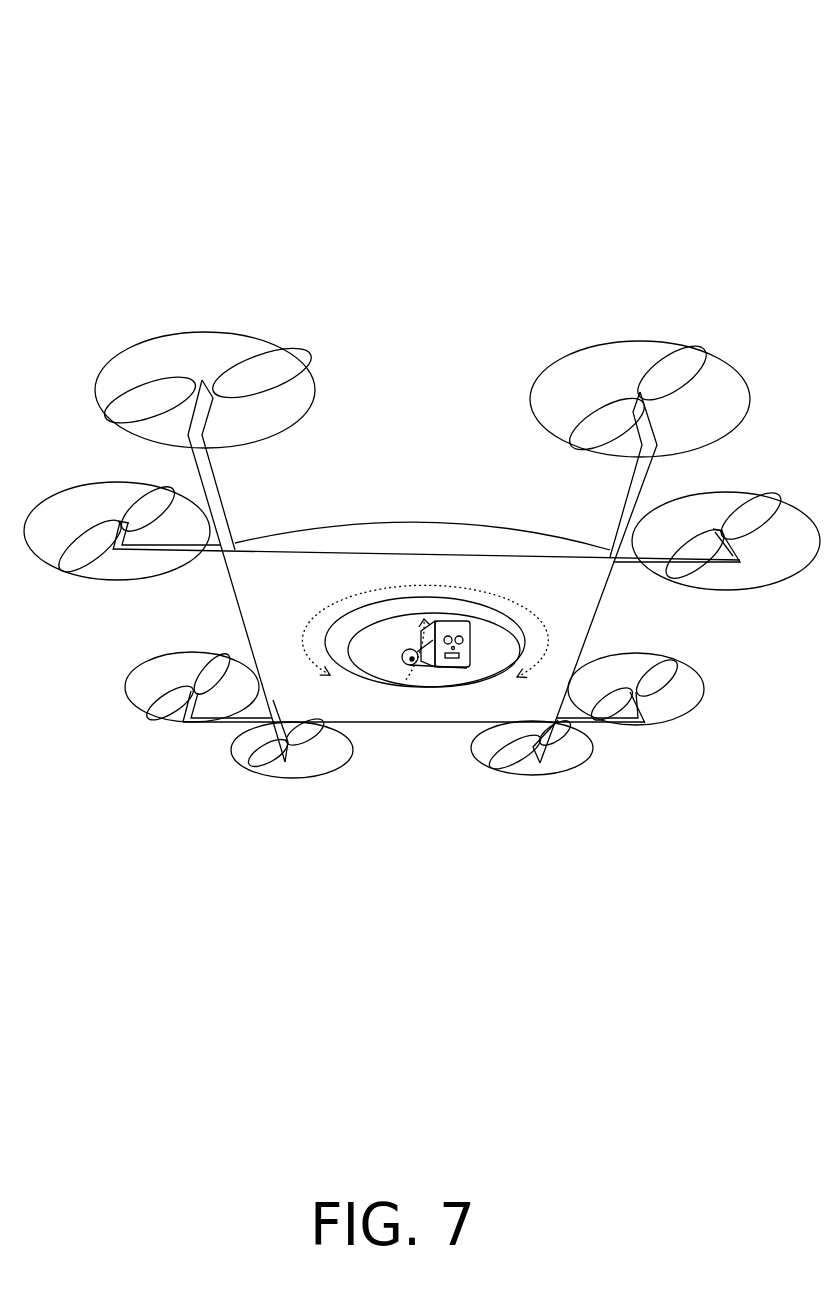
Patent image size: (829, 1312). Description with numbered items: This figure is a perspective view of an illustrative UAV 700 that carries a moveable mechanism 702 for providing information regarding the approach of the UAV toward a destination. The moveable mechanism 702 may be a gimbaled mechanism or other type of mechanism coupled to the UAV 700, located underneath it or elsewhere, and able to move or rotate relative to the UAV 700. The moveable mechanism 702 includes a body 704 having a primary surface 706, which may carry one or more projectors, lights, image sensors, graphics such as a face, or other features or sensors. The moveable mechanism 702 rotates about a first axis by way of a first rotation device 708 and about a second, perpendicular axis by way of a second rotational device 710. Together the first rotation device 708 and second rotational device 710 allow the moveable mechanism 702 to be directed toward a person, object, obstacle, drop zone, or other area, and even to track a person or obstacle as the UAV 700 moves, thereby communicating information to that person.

The UAV 700 is at (422, 430).
The moveable mechanism 702 is at (409, 696).
The body 704 is at (445, 668).
The primary surface 706 is at (460, 613).
The first rotation device 708 is at (387, 688).
The second rotational device 710 is at (410, 652).